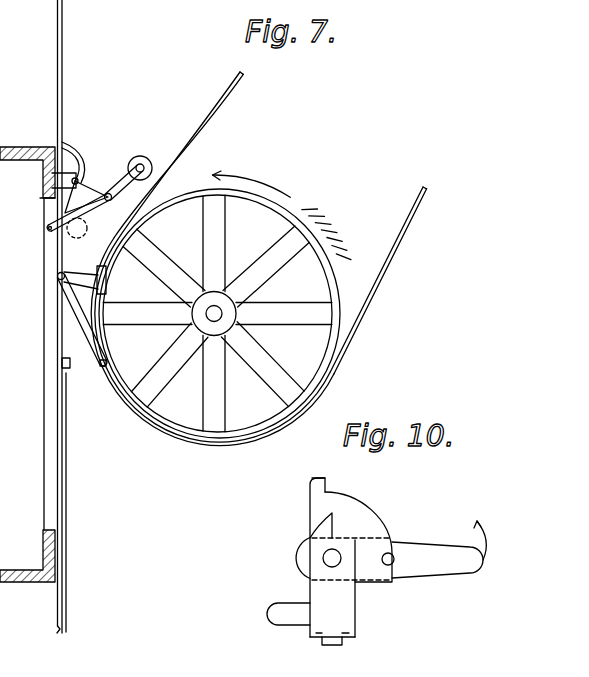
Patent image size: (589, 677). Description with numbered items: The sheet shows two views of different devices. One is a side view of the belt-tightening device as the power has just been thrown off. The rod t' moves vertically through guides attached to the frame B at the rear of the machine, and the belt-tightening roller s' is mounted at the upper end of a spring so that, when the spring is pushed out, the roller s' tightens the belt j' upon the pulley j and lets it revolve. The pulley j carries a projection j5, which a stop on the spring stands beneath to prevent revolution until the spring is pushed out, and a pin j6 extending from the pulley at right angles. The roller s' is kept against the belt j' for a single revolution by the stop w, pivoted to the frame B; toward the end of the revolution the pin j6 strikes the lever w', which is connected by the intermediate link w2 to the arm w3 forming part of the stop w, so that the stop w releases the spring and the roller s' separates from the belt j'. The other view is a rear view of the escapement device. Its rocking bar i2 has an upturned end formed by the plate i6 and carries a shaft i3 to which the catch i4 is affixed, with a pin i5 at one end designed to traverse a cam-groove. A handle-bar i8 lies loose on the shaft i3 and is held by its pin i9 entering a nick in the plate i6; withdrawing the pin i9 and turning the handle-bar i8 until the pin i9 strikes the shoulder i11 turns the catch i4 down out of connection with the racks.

In FIG. 7, the frame B is at (27, 367).
In FIG. 7, the rod t' is at (71, 316).
In FIG. 7, the stop w is at (72, 164).
In FIG. 7, the intermediate link w2 is at (50, 224).
In FIG. 7, the arm w3 is at (89, 192).
In FIG. 7, the lever w' is at (61, 304).
In FIG. 7, the belt-tightening roller s' is at (138, 170).
In FIG. 7, the pulley j is at (219, 313).
In FIG. 7, the belt j' is at (258, 259).
In FIG. 7, the projection j5 is at (107, 276).
In FIG. 7, the pin j6 is at (107, 365).
In FIG. 10, the rocking bar i2 is at (332, 561).
In FIG. 10, the shaft i3 is at (323, 558).
In FIG. 10, the catch i4 is at (325, 530).
In FIG. 10, the pin i5 is at (284, 600).
In FIG. 10, the plate i6 is at (358, 537).
In FIG. 10, the handle-bar i8 is at (399, 550).
In FIG. 10, the pin i9 is at (381, 561).
In FIG. 10, the shoulder i11 is at (322, 485).